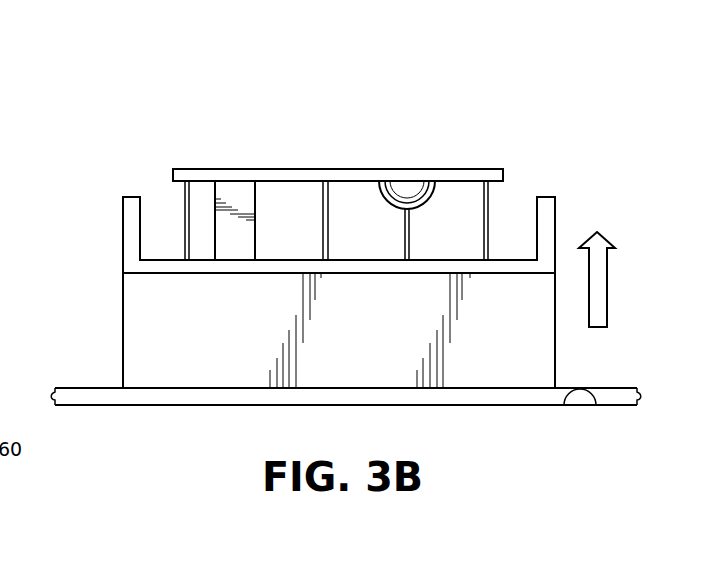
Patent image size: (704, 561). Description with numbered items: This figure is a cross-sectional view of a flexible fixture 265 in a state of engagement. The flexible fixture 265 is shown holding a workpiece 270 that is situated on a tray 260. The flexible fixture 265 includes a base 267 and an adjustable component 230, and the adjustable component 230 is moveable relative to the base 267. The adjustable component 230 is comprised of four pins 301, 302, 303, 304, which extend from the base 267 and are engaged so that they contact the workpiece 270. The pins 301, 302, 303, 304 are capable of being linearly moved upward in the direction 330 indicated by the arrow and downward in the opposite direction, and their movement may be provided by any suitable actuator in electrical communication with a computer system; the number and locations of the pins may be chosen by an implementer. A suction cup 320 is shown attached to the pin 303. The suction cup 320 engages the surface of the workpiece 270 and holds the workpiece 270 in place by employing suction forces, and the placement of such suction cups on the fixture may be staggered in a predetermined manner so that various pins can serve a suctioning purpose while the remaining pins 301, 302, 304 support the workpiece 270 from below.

The adjustable component 230 is at (488, 208).
The tray 260 is at (595, 405).
The flexible fixture 265 is at (121, 325).
The base 267 is at (164, 262).
The workpiece 270 is at (486, 169).
The pin 301 is at (184, 206).
The pin 302 is at (323, 205).
The pin 303 is at (405, 246).
The pin 304 is at (483, 205).
The suction cup 320 is at (378, 188).
The direction 330 is at (607, 300).